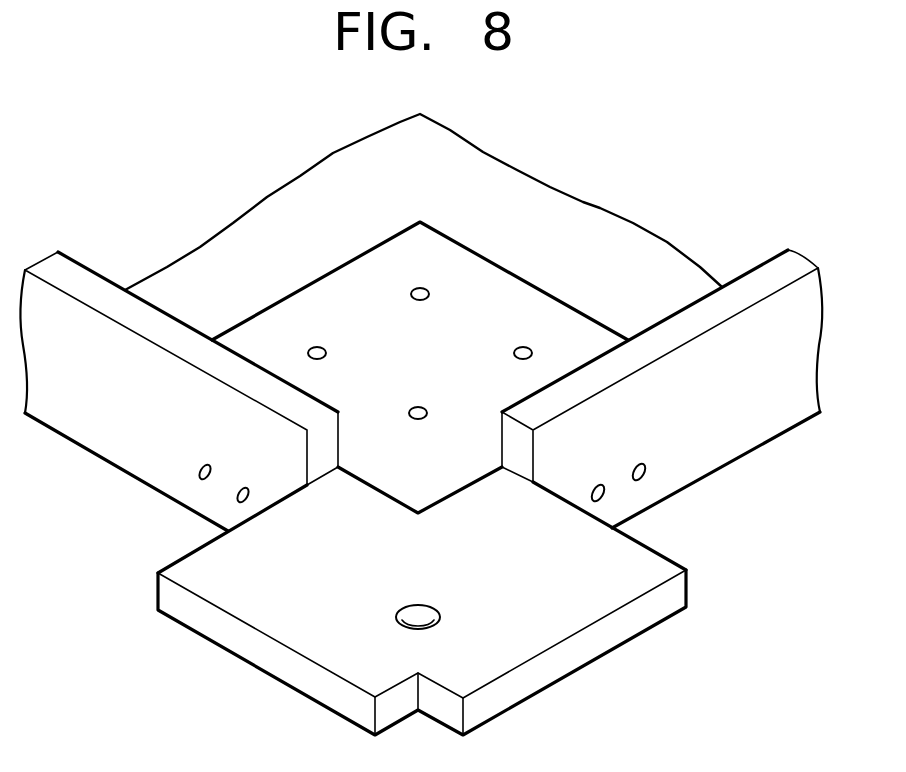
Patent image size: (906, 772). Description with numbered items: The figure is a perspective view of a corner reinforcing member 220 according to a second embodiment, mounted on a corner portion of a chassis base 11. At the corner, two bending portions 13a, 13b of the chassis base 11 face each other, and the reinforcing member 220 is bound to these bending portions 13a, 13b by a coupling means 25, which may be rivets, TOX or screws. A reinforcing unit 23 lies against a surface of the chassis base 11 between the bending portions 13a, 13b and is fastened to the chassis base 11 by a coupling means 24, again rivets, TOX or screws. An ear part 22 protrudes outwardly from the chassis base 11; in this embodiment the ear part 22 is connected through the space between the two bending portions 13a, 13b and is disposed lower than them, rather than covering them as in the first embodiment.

The chassis base 11 is at (557, 211).
The bending portion 13a is at (762, 433).
The bending portion 13b is at (117, 446).
The ear part 22 is at (287, 627).
The reinforcing unit 23 is at (330, 287).
The coupling means 24 is at (415, 288).
The coupling means 25 is at (200, 480).
The corner reinforcing member 220 is at (440, 466).